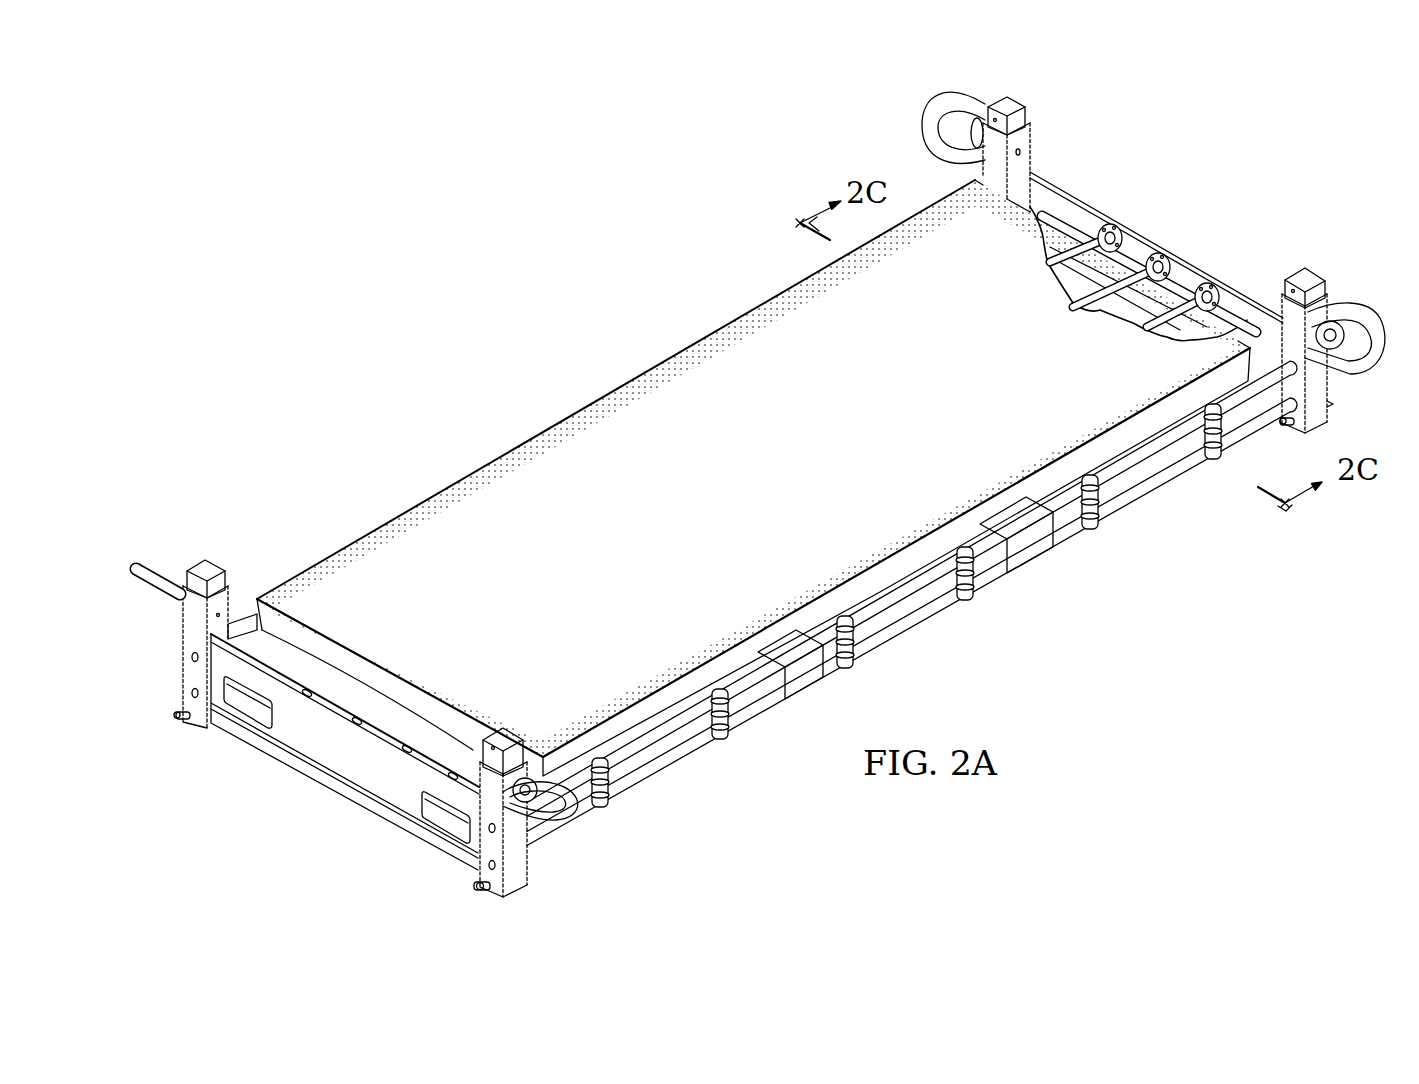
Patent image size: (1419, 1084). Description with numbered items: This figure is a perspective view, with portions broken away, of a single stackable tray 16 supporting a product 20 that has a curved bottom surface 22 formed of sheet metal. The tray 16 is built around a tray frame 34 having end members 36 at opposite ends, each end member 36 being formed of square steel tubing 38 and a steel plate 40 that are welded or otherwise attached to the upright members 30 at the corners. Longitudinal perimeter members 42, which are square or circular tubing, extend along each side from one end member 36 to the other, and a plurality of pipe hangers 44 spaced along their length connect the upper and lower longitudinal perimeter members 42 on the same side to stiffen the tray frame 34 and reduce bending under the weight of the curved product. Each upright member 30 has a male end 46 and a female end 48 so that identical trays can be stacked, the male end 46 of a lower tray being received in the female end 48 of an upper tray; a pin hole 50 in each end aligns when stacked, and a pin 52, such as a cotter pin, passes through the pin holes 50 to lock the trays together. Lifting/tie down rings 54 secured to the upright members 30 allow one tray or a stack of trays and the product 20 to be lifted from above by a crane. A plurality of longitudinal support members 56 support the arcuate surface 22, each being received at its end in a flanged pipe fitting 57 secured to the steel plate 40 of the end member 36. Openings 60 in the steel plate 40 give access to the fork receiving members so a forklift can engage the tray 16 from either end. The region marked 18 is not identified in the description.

The stackable tray 16 is at (606, 355).
The side skirt 18 is at (412, 724).
The product 20 is at (773, 476).
The curved bottom surface 22 is at (363, 676).
The upright member 30 is at (183, 650).
The tray frame 34 is at (918, 647).
The end member 36 is at (350, 816).
The square steel tubing 38 is at (312, 781).
The steel plate 40 is at (312, 743).
The longitudinal perimeter member 42 is at (662, 787).
The pipe hanger 44 is at (727, 748).
The male end 46 is at (203, 561).
The female end 48 is at (178, 727).
The pin 52 is at (472, 893).
The pin hole 50 is at (520, 747).
The lifting/tie down ring 54 is at (160, 597).
The longitudinal support member 56 is at (1058, 257).
The flanged pipe fitting 57 is at (1233, 283).
The opening 60 is at (257, 713).